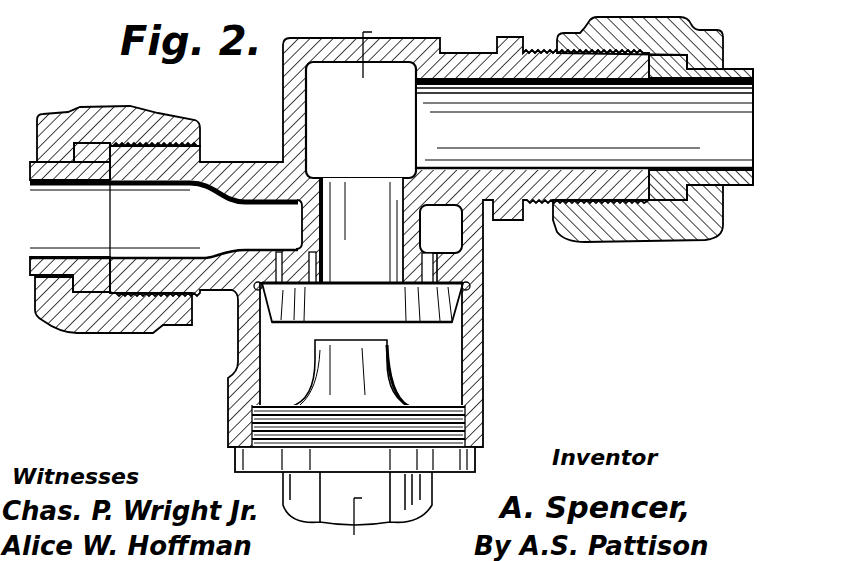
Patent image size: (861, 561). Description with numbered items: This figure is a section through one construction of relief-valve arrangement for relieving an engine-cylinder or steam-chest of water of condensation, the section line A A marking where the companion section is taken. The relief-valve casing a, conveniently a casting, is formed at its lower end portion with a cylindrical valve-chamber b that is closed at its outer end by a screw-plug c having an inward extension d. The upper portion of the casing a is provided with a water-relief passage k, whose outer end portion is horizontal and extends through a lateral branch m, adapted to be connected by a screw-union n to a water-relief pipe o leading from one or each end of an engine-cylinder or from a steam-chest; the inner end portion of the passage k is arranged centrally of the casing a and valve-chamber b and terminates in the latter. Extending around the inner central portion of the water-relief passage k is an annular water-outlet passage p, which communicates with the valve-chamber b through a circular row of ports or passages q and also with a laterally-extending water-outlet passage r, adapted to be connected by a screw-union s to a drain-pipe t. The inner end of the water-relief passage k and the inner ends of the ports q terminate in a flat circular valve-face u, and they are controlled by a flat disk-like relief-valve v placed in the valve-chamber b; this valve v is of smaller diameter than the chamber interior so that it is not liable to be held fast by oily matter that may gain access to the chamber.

The relief-valve casing a is at (472, 256).
The valve-chamber b is at (358, 394).
The screw-plug c is at (140, 218).
The inward extension d is at (351, 373).
The water-relief passage k is at (536, 180).
The lateral branch m is at (533, 50).
The screw-union n is at (638, 129).
The water-relief pipe o is at (701, 127).
The annular water-outlet passage p is at (495, 228).
The ports or passages q is at (493, 277).
The water-outlet passage r is at (166, 219).
The screw-union s is at (140, 117).
The drain-pipe t is at (62, 193).
The valve-face u is at (300, 281).
The relief-valve v is at (362, 302).
The section line A A is at (368, 273).